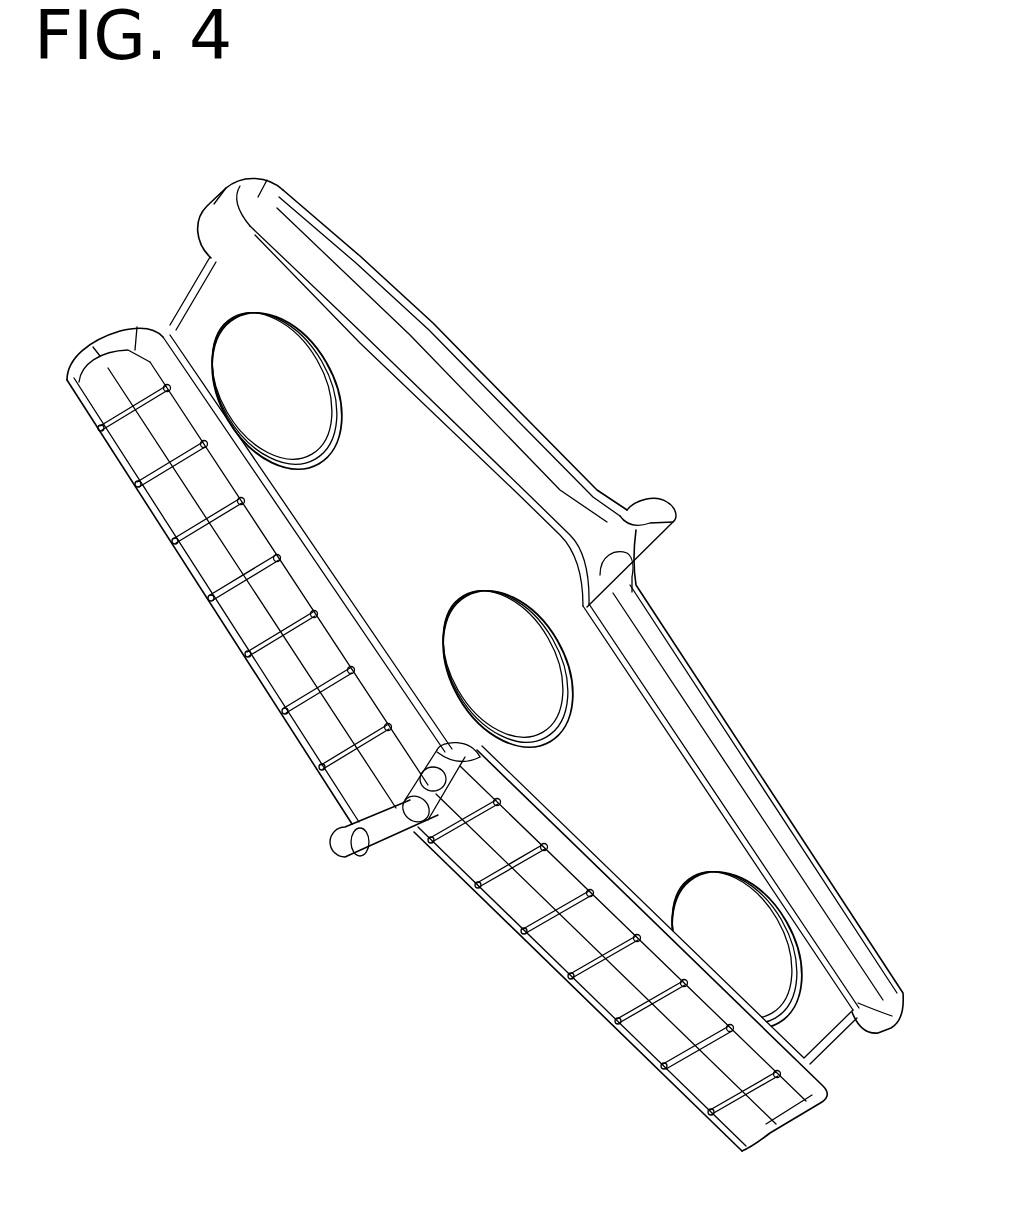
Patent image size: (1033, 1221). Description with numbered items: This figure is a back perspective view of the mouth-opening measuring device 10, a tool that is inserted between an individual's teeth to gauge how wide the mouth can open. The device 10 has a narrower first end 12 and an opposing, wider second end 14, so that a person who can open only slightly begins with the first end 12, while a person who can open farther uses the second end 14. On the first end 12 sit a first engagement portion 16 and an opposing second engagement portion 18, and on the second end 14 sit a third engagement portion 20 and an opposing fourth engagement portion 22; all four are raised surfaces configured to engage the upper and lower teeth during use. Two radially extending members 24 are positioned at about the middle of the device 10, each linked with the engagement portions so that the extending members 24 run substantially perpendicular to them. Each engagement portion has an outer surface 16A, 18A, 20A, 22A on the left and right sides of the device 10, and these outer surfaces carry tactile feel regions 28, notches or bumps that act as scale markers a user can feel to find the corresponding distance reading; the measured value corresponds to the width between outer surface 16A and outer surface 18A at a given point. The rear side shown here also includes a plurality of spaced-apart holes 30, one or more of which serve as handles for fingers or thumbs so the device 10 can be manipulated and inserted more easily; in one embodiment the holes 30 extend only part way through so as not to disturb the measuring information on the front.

The mouth-opening measuring device 10 is at (836, 180).
The first end 12 is at (823, 1040).
The second end 14 is at (198, 281).
The first engagement portion 16 is at (800, 828).
The outer surface of first engagement portion 16A is at (714, 697).
The second engagement portion 18 is at (684, 1018).
The outer surface of second engagement portion 18A is at (572, 955).
The third engagement portion 20 is at (222, 458).
The outer surface of third engagement portion 20A is at (290, 663).
The fourth engagement portion 22 is at (524, 414).
The outer surface of fourth engagement portion 22A is at (434, 322).
The radially extending member 24 is at (669, 521).
The tactile feel region 28 is at (260, 640).
The hole 30 is at (267, 363).